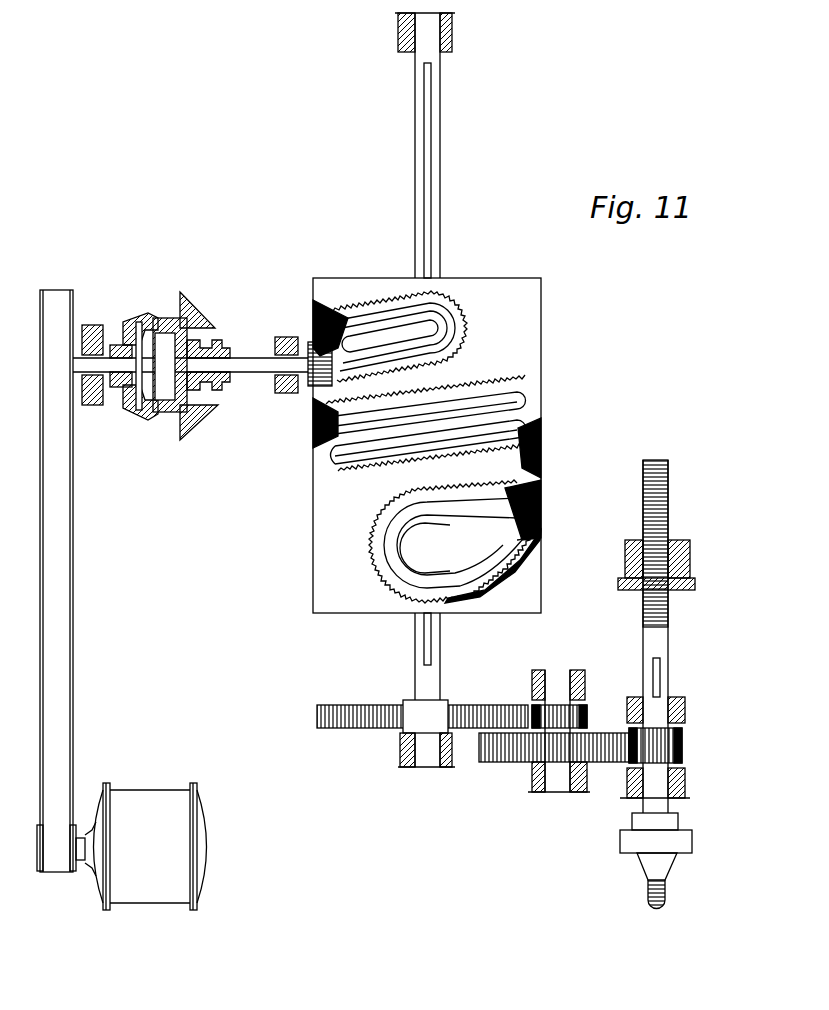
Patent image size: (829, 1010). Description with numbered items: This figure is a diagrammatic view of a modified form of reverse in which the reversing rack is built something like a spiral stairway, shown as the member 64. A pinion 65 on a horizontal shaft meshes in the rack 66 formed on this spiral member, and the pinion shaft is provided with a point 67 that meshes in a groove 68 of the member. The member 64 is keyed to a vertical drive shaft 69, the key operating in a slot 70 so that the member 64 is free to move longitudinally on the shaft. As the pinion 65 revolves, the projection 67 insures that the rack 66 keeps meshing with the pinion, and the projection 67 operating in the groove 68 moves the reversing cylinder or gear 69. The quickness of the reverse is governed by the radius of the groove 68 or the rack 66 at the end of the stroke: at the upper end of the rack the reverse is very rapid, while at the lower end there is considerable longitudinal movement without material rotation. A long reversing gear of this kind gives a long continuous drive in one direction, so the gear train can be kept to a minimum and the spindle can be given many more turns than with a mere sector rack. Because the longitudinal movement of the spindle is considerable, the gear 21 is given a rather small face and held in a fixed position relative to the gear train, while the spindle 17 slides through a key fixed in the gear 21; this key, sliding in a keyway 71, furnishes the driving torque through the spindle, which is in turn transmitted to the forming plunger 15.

The forming plunger 15 is at (662, 868).
The spindle 17 is at (660, 648).
The gear 21 is at (682, 745).
The reversing rack member 64 is at (527, 315).
The pinion 65 is at (318, 345).
The rack 66 is at (377, 312).
The point 67 is at (345, 362).
The groove 68 is at (418, 345).
The drive shaft 69 is at (434, 196).
The slot 70 is at (426, 165).
The keyway 71 is at (658, 678).